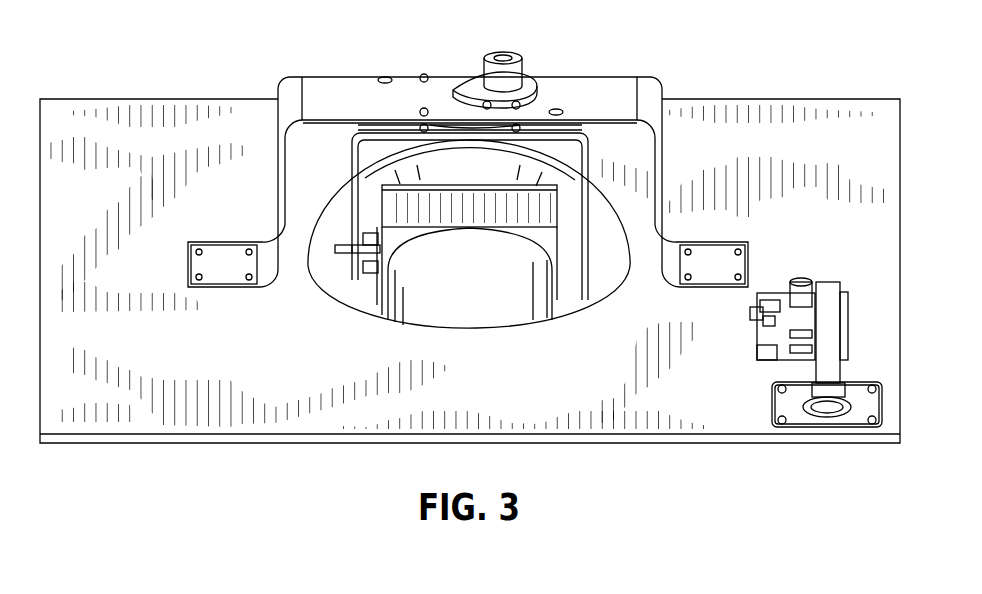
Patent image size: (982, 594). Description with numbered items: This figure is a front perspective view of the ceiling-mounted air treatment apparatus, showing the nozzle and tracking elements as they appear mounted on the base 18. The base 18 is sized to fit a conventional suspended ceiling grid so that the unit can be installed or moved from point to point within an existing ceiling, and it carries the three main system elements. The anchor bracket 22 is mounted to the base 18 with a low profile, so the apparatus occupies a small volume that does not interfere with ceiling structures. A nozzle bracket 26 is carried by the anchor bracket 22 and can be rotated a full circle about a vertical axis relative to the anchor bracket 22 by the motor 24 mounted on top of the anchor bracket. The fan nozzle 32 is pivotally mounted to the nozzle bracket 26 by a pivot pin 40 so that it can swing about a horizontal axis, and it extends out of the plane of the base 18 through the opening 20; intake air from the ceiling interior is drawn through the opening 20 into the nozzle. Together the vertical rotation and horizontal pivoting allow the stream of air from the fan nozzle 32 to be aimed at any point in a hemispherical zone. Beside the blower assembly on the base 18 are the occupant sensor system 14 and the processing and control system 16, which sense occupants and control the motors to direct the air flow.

The occupant sensor system 14 is at (813, 444).
The processing and control system 16 is at (804, 260).
The base 18 is at (140, 112).
The opening 20 is at (362, 302).
The anchor bracket 22 is at (332, 88).
The motor 24 is at (498, 53).
The nozzle bracket 26 is at (352, 190).
The fan nozzle 32 is at (493, 315).
The pivot pin 40 is at (332, 262).